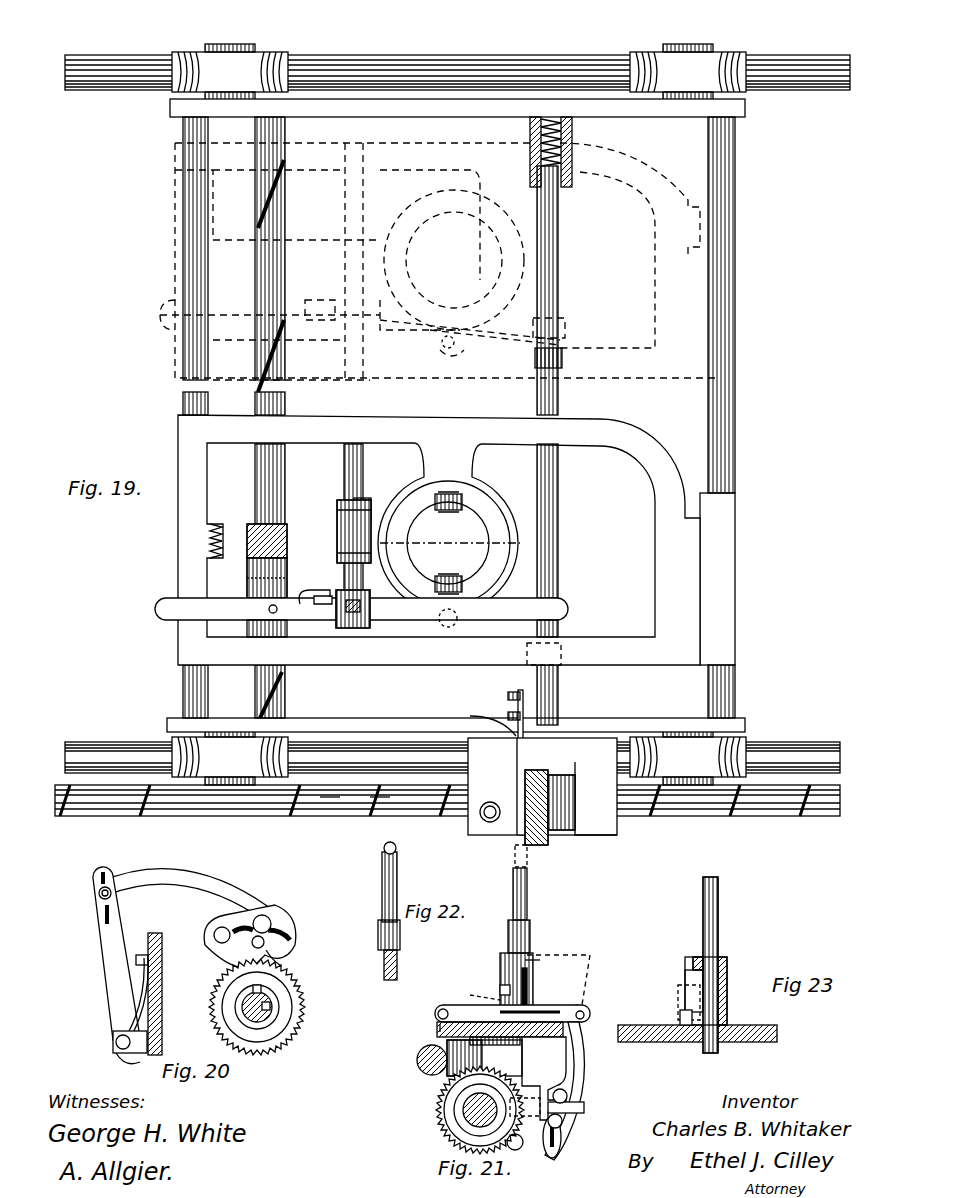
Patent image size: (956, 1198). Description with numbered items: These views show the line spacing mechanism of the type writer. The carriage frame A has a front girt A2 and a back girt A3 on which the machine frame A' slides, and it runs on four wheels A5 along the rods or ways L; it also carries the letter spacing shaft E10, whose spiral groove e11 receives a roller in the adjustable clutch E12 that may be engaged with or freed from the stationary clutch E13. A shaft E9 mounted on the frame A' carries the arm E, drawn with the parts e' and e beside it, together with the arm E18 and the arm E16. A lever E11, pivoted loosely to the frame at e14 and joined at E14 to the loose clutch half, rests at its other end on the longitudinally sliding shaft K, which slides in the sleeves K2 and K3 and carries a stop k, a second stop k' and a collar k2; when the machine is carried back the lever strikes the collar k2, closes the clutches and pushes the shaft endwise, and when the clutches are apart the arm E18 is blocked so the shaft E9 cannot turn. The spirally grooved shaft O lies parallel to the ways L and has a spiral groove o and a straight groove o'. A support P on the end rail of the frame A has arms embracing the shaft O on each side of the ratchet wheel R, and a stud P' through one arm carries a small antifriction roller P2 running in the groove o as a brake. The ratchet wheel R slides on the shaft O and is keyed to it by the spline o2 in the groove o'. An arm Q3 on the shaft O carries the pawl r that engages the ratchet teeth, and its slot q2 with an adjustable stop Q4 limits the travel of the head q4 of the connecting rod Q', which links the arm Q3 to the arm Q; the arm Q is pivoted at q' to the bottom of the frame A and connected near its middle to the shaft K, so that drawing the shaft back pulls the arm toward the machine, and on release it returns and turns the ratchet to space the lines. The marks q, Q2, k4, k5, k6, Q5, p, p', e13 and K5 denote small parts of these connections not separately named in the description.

In FIG. 19, the ways L is at (458, 57).
In FIG. 21, the ways L is at (418, 1062).
In FIG. 19, the spirally grooved shaft O is at (310, 818).
In FIG. 20, the spirally grooved shaft O is at (245, 1016).
In FIG. 21, the spirally grooved shaft O is at (462, 1118).
In FIG. 19, the spiral groove o is at (330, 815).
In FIG. 20, the spiral groove o is at (276, 1007).
In FIG. 19, the straight groove o' is at (379, 815).
In FIG. 19, the wheels A5 is at (459, 414).
In FIG. 21, the wheels A5 is at (484, 1058).
In FIG. 19, the carriage frame A is at (456, 415).
In FIG. 20, the carriage frame A is at (157, 994).
In FIG. 21, the carriage frame A is at (479, 1033).
In FIG. 23, the carriage frame A is at (697, 1022).
In FIG. 19, the front girt A2 is at (192, 352).
In FIG. 19, the back girt A3 is at (735, 405).
In FIG. 19, the shaft E10 is at (262, 482).
In FIG. 19, the spiral groove e11 is at (280, 498).
In FIG. 19, the sleeve K3 is at (572, 121).
In FIG. 21, the sleeve K3 is at (505, 966).
In FIG. 19, the sleeve K2 is at (530, 151).
In FIG. 19, the longitudinally sliding shaft K is at (558, 514).
In FIG. 21, the longitudinally sliding shaft K is at (508, 925).
In FIG. 23, the longitudinally sliding shaft K is at (703, 906).
In FIG. 19, the collar k2 is at (562, 360).
In FIG. 19, the machine frame A' is at (439, 540).
In FIG. 19, the arm E is at (340, 545).
In FIG. 19, the arm e' is at (389, 511).
In FIG. 19, the clamp block e is at (448, 577).
In FIG. 19, the shaft E9 is at (352, 484).
In FIG. 19, the stationary clutch E13 is at (247, 560).
In FIG. 19, the adjustable clutch E12 is at (247, 586).
In FIG. 19, the lever E11 is at (560, 606).
In FIG. 19, the pivot E14 is at (260, 650).
In FIG. 19, the arm E16 is at (350, 640).
In FIG. 19, the arm E18 is at (336, 584).
In FIG. 19, the pin e13 is at (278, 609).
In FIG. 19, the pivot joint e14 is at (450, 626).
In FIG. 19, the collar or stop k is at (562, 627).
In FIG. 19, the shoulder or stop k' is at (560, 654).
In FIG. 21, the shoulder or stop k' is at (540, 939).
In FIG. 19, the arm Q is at (494, 758).
In FIG. 20, the arm Q is at (109, 953).
In FIG. 21, the arm Q is at (500, 1006).
In FIG. 23, the arm Q is at (661, 1012).
In FIG. 19, the connecting rod Q' is at (480, 719).
In FIG. 20, the connecting rod Q' is at (191, 894).
In FIG. 21, the connecting rod Q' is at (578, 1091).
In FIG. 19, the bracket k4 is at (518, 690).
In FIG. 23, the bracket k4 is at (693, 960).
In FIG. 19, the bracket k5 is at (507, 713).
In FIG. 23, the bracket k5 is at (678, 1002).
In FIG. 19, the frame or support P is at (542, 786).
In FIG. 21, the frame or support P is at (544, 1078).
In FIG. 19, the pivot p' is at (480, 832).
In FIG. 19, the ratchet wheel R is at (540, 845).
In FIG. 20, the ratchet wheel R is at (300, 1012).
In FIG. 21, the ratchet wheel R is at (440, 1108).
In FIG. 19, the pawl r is at (575, 800).
In FIG. 20, the pawl r is at (282, 958).
In FIG. 19, the arm Q3 is at (520, 845).
In FIG. 20, the arm Q3 is at (296, 942).
In FIG. 21, the arm Q3 is at (562, 1133).
In FIG. 20, the slot q is at (93, 898).
In FIG. 20, the spring Q2 is at (130, 1000).
In FIG. 20, the pivot q' is at (118, 1047).
In FIG. 21, the pivot q' is at (414, 1021).
In FIG. 20, the adjustable stop Q4 is at (214, 932).
In FIG. 20, the head q4 is at (264, 916).
In FIG. 21, the head q4 is at (525, 1108).
In FIG. 20, the slot q2 is at (290, 930).
In FIG. 21, the slot q2 is at (565, 1138).
In FIG. 20, the key or spline o2 is at (235, 1003).
In FIG. 22, the stud P' is at (375, 882).
In FIG. 21, the stud P' is at (580, 1102).
In FIG. 22, the antifriction roller P2 is at (384, 972).
In FIG. 21, the recess k6 is at (500, 990).
In FIG. 23, the recess k6 is at (688, 984).
In FIG. 21, the link Q5 is at (500, 1002).
In FIG. 21, the pin p is at (517, 1151).
In FIG. 23, the bracket K5 is at (752, 990).